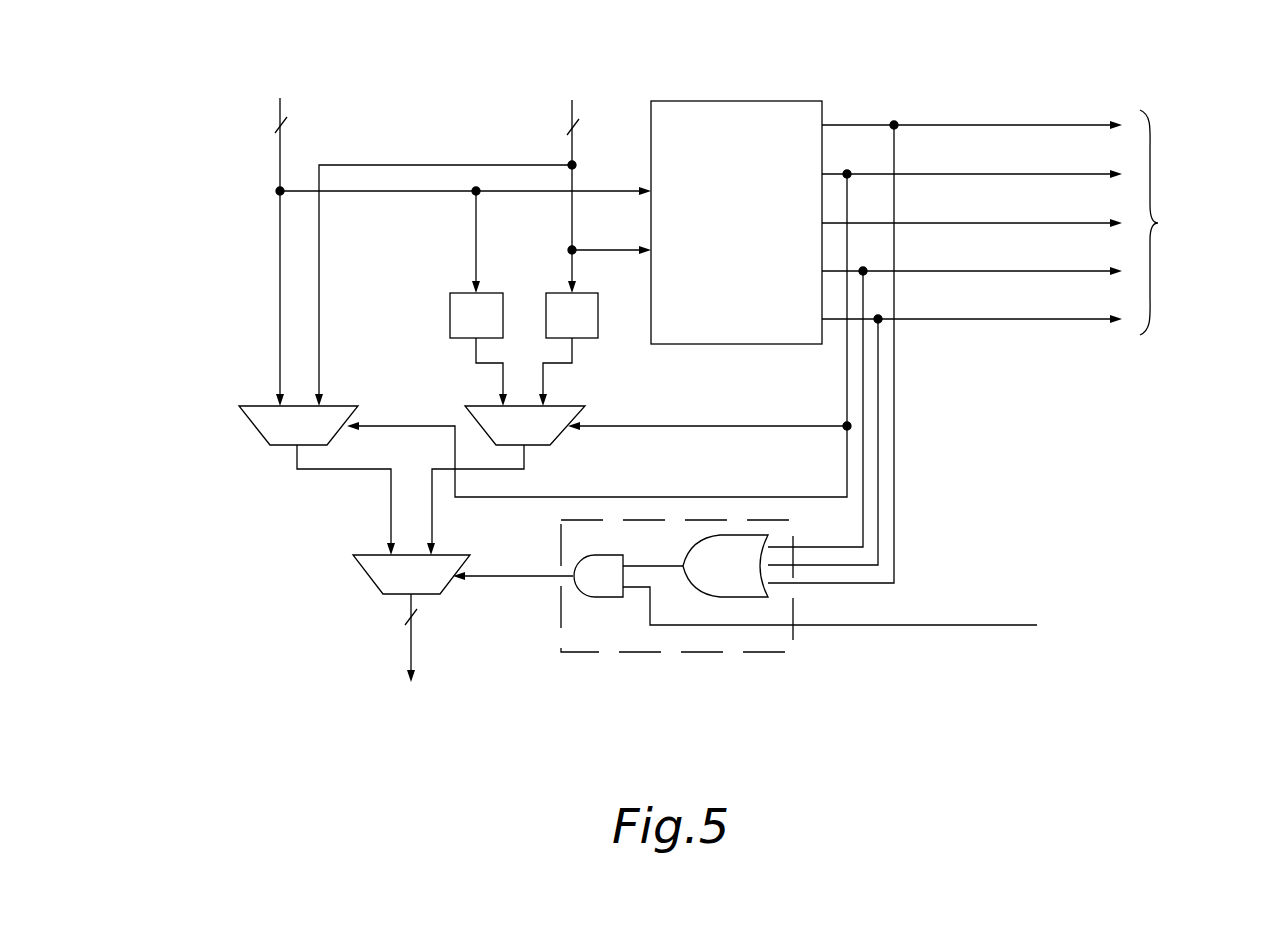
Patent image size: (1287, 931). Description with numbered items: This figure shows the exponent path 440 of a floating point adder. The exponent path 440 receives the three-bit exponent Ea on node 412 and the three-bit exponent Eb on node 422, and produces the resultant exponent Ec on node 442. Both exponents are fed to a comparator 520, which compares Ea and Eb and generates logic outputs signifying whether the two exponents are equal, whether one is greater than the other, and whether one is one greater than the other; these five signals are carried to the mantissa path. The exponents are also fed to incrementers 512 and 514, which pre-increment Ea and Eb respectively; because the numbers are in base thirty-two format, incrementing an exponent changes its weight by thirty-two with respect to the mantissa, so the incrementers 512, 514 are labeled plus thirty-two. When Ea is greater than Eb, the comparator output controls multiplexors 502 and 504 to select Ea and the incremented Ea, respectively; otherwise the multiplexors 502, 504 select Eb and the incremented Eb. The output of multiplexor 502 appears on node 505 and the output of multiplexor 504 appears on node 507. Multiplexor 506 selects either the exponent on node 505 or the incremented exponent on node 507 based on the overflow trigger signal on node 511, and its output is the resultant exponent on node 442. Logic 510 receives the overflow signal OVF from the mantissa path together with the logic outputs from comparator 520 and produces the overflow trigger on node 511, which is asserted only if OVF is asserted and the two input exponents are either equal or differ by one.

The exponent path 440 is at (178, 70).
The node 412 is at (278, 163).
The node 422 is at (570, 147).
The comparator 520 is at (735, 101).
The incrementer 512 is at (450, 305).
The incrementer 514 is at (590, 338).
The multiplexor 502 is at (262, 437).
The multiplexor 504 is at (558, 440).
The node 505 is at (389, 522).
The node 507 is at (434, 522).
The multiplexor 506 is at (446, 590).
The node 442 is at (410, 646).
The logic 510 is at (582, 656).
The node 511 is at (535, 580).